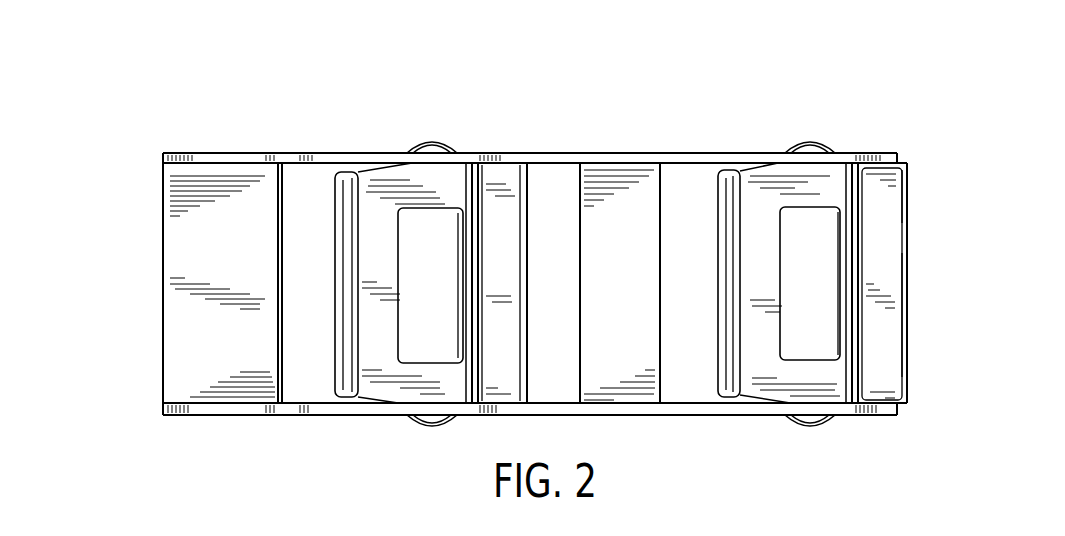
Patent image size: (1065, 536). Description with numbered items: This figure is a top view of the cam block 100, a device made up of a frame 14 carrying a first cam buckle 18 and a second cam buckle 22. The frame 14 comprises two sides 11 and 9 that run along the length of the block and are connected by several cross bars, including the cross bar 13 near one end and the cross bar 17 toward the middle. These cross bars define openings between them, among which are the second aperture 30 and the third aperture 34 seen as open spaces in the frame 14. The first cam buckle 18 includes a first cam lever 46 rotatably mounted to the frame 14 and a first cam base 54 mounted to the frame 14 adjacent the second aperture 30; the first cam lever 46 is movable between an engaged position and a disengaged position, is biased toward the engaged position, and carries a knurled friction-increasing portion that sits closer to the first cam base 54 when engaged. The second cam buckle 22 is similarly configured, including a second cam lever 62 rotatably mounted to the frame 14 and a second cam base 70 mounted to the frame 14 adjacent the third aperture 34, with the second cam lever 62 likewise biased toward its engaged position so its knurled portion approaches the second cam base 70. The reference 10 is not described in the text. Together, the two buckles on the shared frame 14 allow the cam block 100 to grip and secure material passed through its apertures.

The cam block 100 is at (978, 147).
The cross bar 13 is at (250, 253).
The second cam buckle 22 is at (305, 272).
The first cam lever 46 is at (363, 200).
The first cam buckle 18 is at (398, 176).
The side 9 is at (538, 152).
The first cam base 54 is at (504, 283).
The second aperture 30 is at (556, 268).
The cross bar 17 is at (622, 283).
The third aperture 34 is at (695, 268).
The second cam lever 62 is at (753, 212).
The rear seat 10 is at (797, 197).
The second cam base 70 is at (900, 245).
The frame 14 is at (332, 414).
The side 11 is at (552, 415).